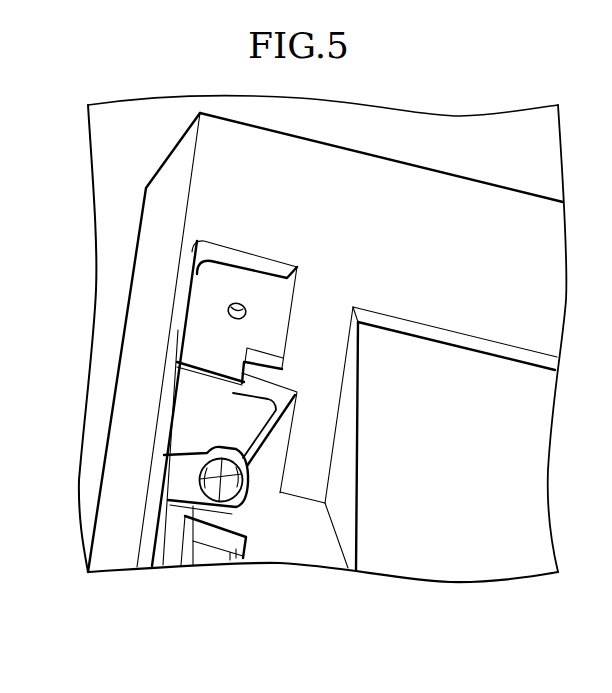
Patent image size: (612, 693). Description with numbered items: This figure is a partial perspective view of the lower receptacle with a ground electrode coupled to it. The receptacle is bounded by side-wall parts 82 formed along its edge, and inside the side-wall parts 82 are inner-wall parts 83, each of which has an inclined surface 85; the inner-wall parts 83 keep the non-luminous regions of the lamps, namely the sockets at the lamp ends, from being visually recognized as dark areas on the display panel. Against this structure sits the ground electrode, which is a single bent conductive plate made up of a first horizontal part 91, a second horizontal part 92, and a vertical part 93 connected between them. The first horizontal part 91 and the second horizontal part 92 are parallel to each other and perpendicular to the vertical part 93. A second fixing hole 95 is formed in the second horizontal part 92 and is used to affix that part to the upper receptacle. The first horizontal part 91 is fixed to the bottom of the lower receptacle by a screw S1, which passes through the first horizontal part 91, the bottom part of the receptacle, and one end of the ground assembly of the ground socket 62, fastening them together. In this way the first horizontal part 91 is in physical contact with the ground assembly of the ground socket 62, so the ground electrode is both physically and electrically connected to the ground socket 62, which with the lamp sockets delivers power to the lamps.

The side-wall part 82 is at (160, 228).
The inner-wall part 83 is at (418, 490).
The inclined surface 85 is at (340, 510).
The second horizontal part 92 is at (162, 403).
The second fixing hole 95 is at (227, 307).
The vertical part 93 is at (193, 400).
The first horizontal part 91 is at (161, 480).
The screw S1 is at (192, 482).
The ground socket 62 is at (205, 537).